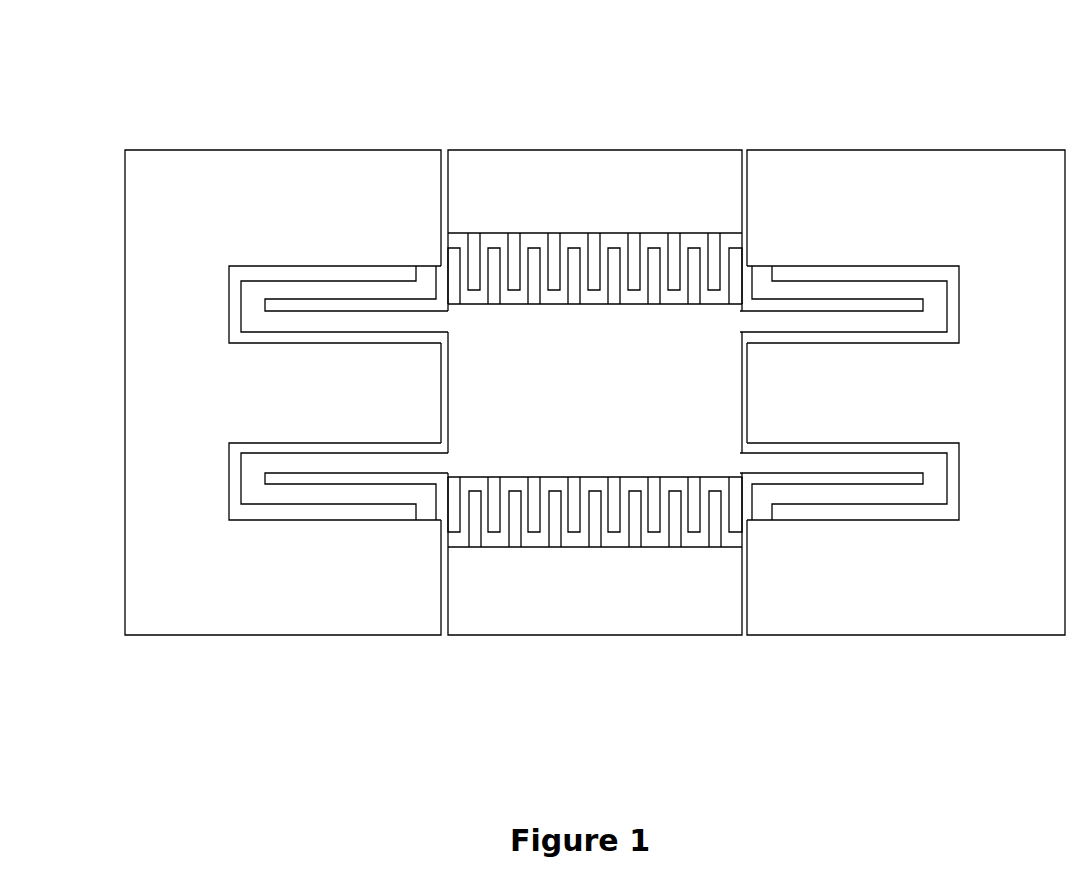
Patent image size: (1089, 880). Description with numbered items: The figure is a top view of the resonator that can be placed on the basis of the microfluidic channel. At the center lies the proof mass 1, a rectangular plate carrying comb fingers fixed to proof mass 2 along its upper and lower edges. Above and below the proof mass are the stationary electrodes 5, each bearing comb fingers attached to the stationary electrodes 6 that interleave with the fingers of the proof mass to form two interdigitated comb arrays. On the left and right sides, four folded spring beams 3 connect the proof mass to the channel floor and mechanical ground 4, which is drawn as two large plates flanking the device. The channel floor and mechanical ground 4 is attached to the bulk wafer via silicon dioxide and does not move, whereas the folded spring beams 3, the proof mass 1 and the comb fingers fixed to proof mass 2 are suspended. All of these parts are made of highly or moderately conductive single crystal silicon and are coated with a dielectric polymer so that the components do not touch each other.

The proof mass 1 is at (530, 407).
The comb fingers fixed to proof mass 2 is at (698, 530).
The folded spring beams 3 is at (773, 314).
The channel floor and mechanical ground 4 is at (870, 165).
The stationary electrodes 5 is at (508, 195).
The comb fingers attached to the stationary electrodes 6 is at (512, 505).